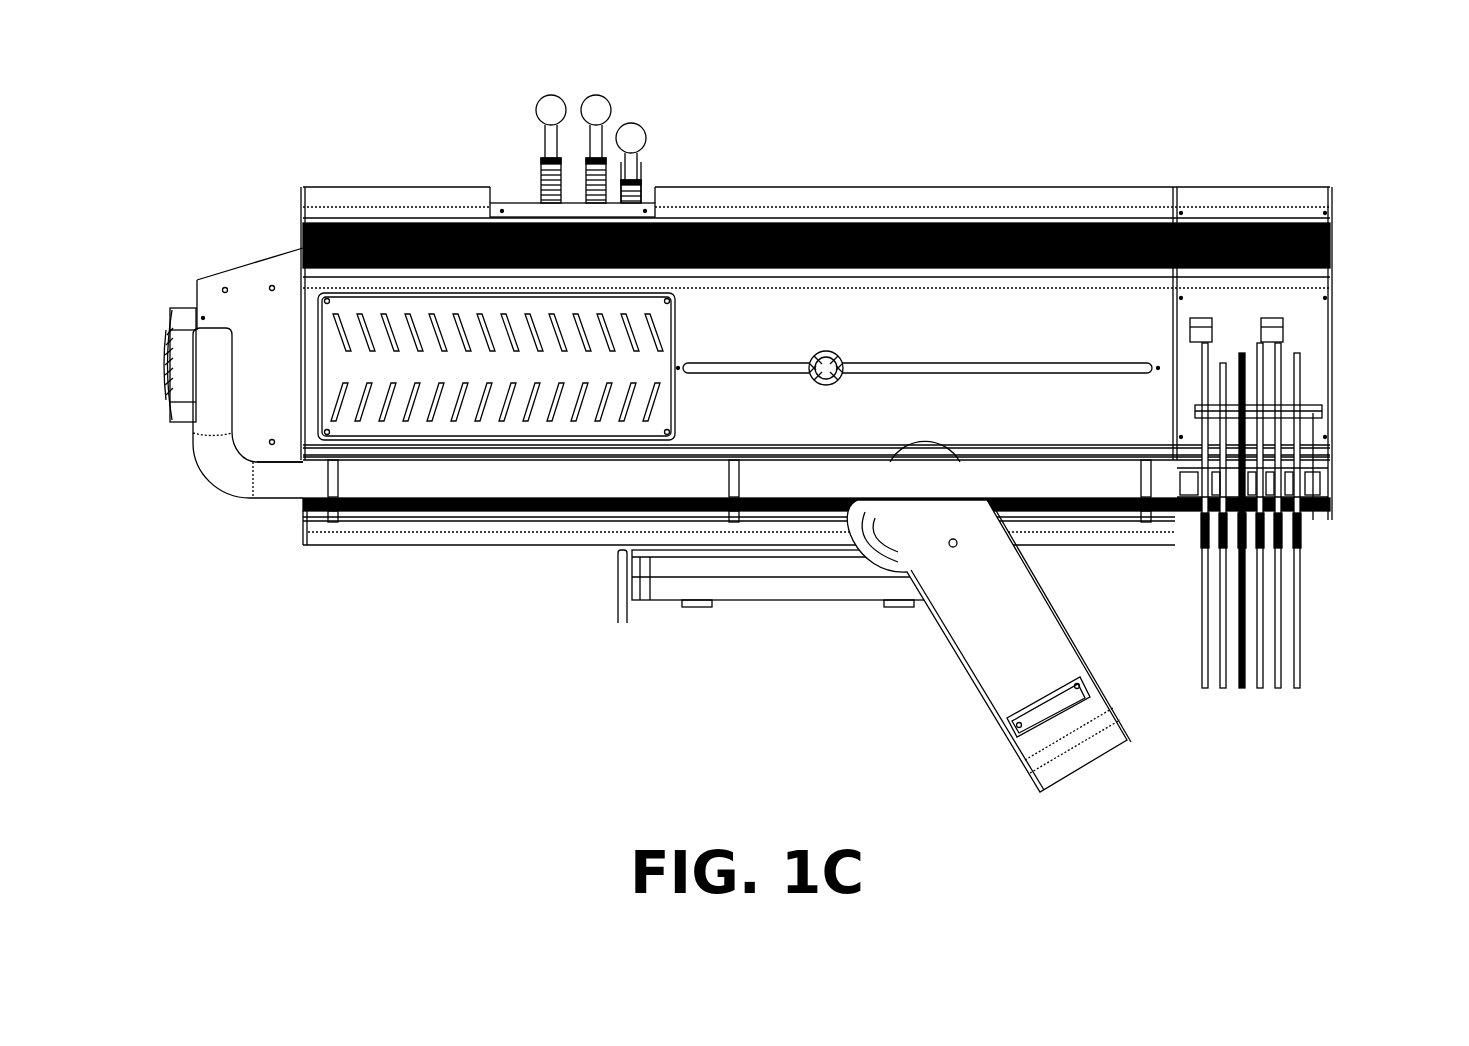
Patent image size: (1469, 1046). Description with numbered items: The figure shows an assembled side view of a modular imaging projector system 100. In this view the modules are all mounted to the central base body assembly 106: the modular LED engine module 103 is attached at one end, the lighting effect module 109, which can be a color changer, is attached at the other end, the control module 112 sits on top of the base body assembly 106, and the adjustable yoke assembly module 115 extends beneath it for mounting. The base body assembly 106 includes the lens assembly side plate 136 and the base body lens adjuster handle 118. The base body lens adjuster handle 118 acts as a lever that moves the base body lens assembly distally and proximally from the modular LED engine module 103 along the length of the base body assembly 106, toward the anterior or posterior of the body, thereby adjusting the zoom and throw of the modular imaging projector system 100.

The modular imaging projector system 100 is at (256, 51).
The modular LED engine module 103 is at (195, 235).
The base body assembly 106 is at (367, 575).
The lighting effect module 109 is at (1342, 538).
The control module 112 is at (498, 135).
The adjustable yoke assembly module 115 is at (902, 664).
The base body lens adjuster handle 118 is at (823, 388).
The lens assembly side plate 136 is at (916, 334).